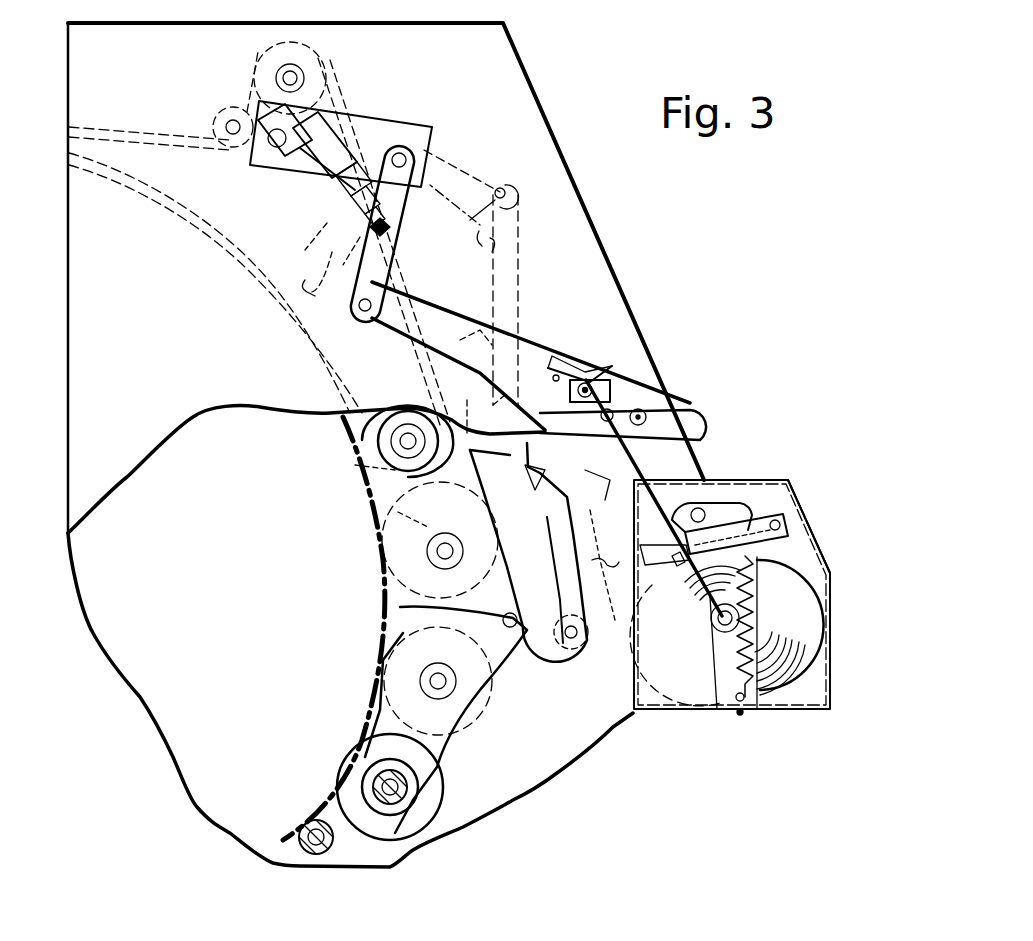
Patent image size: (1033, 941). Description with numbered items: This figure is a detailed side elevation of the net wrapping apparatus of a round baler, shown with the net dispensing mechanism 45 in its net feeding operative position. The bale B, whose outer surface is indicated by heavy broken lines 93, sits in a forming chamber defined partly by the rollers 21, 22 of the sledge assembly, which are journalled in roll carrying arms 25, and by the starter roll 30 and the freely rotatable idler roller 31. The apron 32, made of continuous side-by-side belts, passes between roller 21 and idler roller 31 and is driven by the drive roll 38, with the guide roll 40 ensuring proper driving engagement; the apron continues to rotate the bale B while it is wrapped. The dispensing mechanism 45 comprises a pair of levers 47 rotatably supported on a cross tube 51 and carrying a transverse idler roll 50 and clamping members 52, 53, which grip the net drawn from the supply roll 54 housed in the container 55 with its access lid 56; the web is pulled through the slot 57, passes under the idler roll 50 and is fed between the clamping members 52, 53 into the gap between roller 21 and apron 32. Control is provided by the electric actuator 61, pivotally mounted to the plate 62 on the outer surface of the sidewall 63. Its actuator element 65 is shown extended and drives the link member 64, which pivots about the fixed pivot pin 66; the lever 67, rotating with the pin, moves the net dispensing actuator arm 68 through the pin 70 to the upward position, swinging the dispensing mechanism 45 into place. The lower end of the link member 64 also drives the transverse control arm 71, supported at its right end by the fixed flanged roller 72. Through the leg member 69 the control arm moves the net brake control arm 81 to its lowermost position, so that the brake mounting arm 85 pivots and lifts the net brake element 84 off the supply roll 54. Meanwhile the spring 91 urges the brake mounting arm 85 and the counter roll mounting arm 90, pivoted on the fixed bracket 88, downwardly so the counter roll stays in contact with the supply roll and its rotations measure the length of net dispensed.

The bale B is at (180, 627).
The roller 21 is at (426, 550).
The roller 22 is at (397, 672).
The roll carrying arm 25 is at (347, 773).
The starter roll 30 is at (297, 847).
The idler roller 31 is at (350, 438).
The apron 32 is at (122, 178).
The drive roll 38 is at (285, 52).
The guide roll 40 is at (224, 108).
The net dispensing mechanism 45 is at (505, 552).
The lever 47 is at (540, 630).
The idler roll 50 is at (543, 637).
The cross tube 51 is at (503, 620).
The clamping member 52 is at (355, 475).
The clamping member 53 is at (397, 520).
The supply roll 54 is at (810, 612).
The container 55 is at (832, 668).
The access lid 56 is at (806, 512).
The slot 57 is at (598, 545).
The electric actuator 61 is at (310, 167).
The plate 62 is at (366, 125).
The sidewall 63 is at (510, 118).
The link member 64 is at (372, 262).
The actuator element 65 is at (357, 217).
The pivot pin 66 is at (400, 153).
The lever 67 is at (448, 157).
The net dispensing actuator arm 68 is at (508, 275).
The leg member 69 is at (608, 385).
The pin 70 is at (503, 192).
The control arm 71 is at (440, 333).
The flanged roller 72 is at (657, 387).
The net brake control arm 81 is at (700, 505).
The net brake element 84 is at (797, 547).
The brake mounting arm 85 is at (737, 680).
The fixed bracket 88 is at (685, 645).
The counter roll mounting arm 90 is at (712, 500).
The spring 91 is at (715, 690).
The heavy broken lines 93 is at (365, 492).